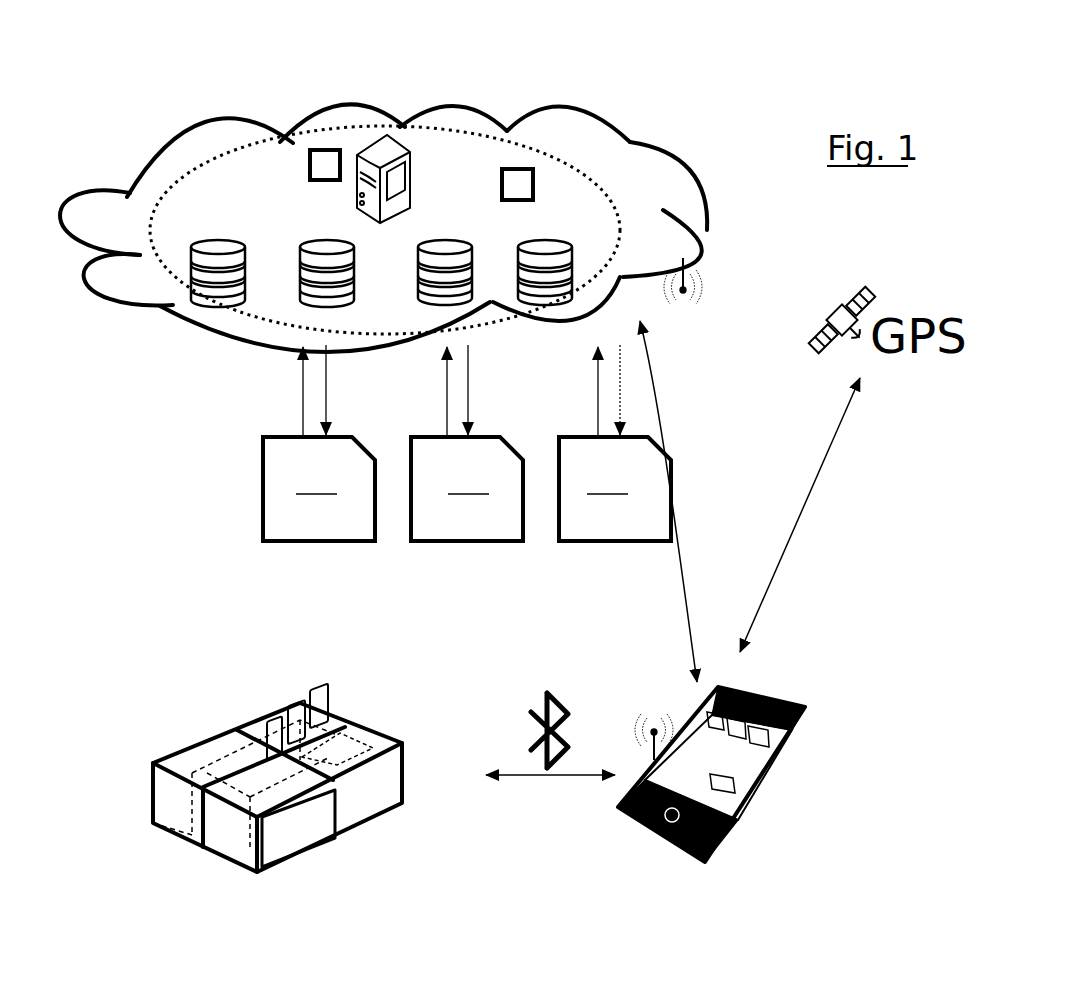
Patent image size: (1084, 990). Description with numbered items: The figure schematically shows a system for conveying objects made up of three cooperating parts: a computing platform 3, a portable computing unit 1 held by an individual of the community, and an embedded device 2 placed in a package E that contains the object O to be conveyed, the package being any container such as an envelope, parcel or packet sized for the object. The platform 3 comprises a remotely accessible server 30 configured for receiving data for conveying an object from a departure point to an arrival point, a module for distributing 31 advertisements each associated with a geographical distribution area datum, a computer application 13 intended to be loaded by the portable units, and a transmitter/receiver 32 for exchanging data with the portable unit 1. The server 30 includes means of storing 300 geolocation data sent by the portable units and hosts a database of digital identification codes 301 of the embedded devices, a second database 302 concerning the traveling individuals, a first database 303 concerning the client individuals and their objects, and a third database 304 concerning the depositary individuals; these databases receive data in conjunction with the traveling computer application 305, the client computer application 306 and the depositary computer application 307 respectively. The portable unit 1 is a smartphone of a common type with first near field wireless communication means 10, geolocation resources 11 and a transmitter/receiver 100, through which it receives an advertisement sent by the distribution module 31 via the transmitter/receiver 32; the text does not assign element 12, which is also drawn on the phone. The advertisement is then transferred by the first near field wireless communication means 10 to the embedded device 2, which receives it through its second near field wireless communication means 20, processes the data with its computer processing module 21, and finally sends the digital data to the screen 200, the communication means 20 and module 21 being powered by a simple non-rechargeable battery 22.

The portable computing unit 1 is at (779, 720).
The first near field wireless communication means 10 is at (735, 685).
The geolocation resources 11 is at (757, 687).
The applications 12 is at (770, 733).
The computer application 13 is at (513, 167).
The transmitter/receiver 100 is at (683, 748).
The embedded device 2 is at (296, 802).
The second near field wireless communication means 20 is at (270, 867).
The computer processing module 21 is at (292, 855).
The non-rechargeable battery 22 is at (322, 843).
The screen 200 is at (343, 743).
The package E is at (191, 733).
The object O is at (367, 797).
The computing platform 3 is at (200, 167).
The server 30 is at (380, 143).
The distribution module 31 is at (313, 147).
The transmitter/receiver 32 is at (706, 257).
The means of storing geolocation data 300 is at (402, 127).
The database of digital identification codes 301 is at (197, 240).
The second database 302 is at (327, 240).
The first database 303 is at (453, 237).
The third database 304 is at (547, 237).
The traveling computer application 305 is at (319, 443).
The client computer application 306 is at (467, 443).
The depositary computer application 307 is at (615, 443).